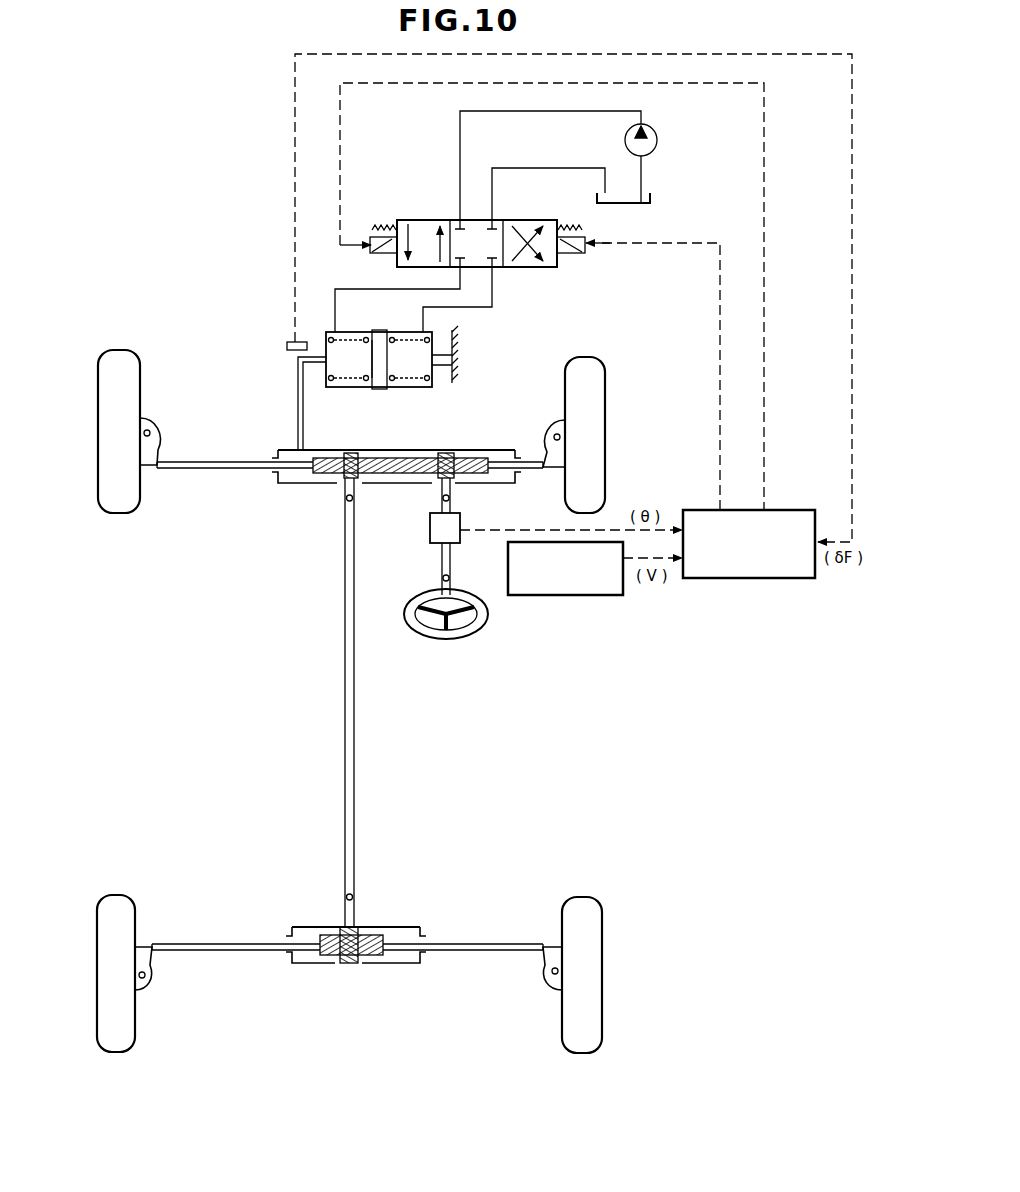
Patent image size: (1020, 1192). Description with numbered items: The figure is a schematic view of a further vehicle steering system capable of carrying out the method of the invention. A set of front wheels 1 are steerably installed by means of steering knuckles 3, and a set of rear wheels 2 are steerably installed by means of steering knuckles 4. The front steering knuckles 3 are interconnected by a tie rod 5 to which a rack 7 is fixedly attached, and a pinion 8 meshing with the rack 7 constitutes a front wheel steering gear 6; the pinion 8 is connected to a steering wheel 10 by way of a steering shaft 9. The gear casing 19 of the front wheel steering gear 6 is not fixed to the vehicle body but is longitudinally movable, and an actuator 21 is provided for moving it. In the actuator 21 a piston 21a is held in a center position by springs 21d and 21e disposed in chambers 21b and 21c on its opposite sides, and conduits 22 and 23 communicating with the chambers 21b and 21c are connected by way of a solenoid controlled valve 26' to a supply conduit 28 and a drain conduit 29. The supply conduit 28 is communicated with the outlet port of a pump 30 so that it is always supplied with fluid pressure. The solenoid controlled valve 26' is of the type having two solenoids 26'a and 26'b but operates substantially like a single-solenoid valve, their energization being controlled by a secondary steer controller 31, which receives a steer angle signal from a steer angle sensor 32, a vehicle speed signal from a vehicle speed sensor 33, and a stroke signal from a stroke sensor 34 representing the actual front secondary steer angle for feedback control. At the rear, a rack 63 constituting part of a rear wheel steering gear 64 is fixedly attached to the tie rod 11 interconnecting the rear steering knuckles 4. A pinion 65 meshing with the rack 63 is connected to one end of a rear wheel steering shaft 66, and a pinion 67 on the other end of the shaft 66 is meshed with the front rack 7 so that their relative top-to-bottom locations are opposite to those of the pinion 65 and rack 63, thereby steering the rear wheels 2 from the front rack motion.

The front wheel 1 is at (122, 511).
The rear wheel 2 is at (122, 1045).
The steering knuckle 3 is at (152, 425).
The steering knuckle 4 is at (152, 968).
The tie rod 5 is at (209, 470).
The front wheel steering gear 6 is at (290, 490).
The rack 7 is at (500, 462).
The pinion 8 is at (458, 484).
The steering shaft 9 is at (450, 555).
The steering wheel 10 is at (490, 617).
The tie rod 11 is at (220, 942).
The gear casing 19 is at (467, 456).
The actuator 21 is at (408, 363).
The piston 21a is at (378, 330).
The chamber 21b is at (337, 381).
The chamber 21c is at (420, 384).
The spring 21d is at (365, 392).
The spring 21e is at (402, 381).
The conduit 22 is at (352, 289).
The conduit 23 is at (495, 285).
The solenoid controlled valve 26' is at (476, 202).
The solenoid 26'a is at (372, 214).
The solenoid 26'b is at (595, 257).
The supply conduit 28 is at (460, 152).
The drain conduit 29 is at (551, 168).
The pump 30 is at (658, 133).
The secondary steer controller 31 is at (784, 510).
The steer angle sensor 32 is at (430, 536).
The vehicle speed sensor 33 is at (617, 596).
The stroke sensor 34 is at (287, 344).
The rack 63 is at (331, 964).
The rear wheel steering gear 64 is at (305, 966).
The pinion 65 is at (368, 964).
The rear wheel steering shaft 66 is at (345, 648).
The pinion 67 is at (341, 480).